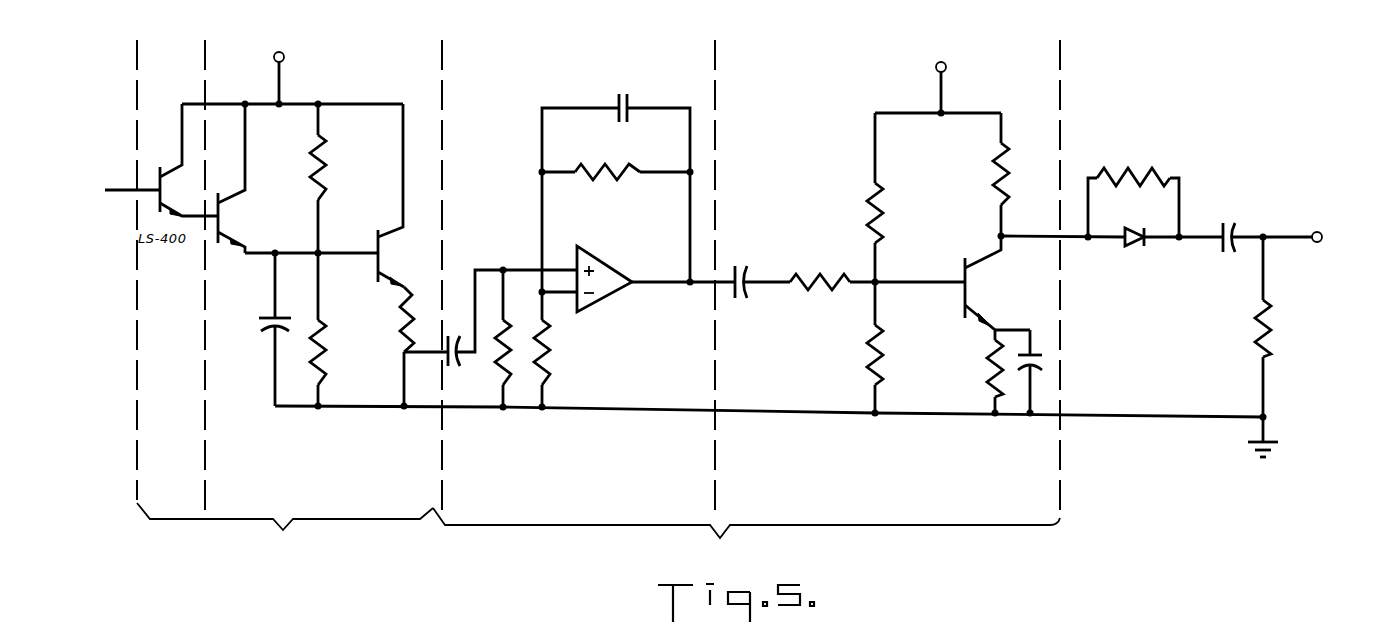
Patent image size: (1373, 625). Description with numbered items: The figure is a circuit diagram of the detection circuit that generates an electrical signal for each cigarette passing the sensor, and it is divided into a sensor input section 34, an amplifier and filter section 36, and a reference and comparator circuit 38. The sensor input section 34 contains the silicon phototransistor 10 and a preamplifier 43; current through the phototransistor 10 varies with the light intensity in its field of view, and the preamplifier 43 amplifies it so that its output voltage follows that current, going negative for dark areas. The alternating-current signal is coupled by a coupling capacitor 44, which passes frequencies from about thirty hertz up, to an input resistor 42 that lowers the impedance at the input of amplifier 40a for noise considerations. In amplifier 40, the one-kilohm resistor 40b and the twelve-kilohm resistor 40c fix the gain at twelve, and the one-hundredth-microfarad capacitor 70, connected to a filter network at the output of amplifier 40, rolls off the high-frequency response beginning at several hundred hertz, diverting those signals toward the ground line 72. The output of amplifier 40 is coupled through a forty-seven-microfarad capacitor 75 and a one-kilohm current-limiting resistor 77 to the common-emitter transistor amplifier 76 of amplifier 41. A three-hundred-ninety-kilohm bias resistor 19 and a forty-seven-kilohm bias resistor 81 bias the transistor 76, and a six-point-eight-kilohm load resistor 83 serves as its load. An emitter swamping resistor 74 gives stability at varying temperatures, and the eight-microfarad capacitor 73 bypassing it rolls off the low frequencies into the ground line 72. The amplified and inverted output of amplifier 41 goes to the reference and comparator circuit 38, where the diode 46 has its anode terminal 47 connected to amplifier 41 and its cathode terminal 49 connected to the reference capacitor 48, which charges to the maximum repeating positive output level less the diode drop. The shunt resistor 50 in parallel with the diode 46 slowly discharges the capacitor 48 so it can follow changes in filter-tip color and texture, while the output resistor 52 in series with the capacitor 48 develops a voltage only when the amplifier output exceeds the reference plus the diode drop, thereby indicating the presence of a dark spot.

The silicon phototransistor 10 is at (164, 160).
The 390K resistor 19 is at (886, 183).
The sensor input section 34 is at (280, 504).
The amplifier and filter section 36 is at (746, 538).
The reference and comparator circuit 38 is at (1185, 339).
The amplifier 40 is at (589, 292).
The amplifier 40a is at (606, 268).
The 1K resistor 40b is at (548, 383).
The 12K resistor 40c is at (612, 179).
The amplifier 41 is at (891, 283).
The input resistor 42 is at (496, 408).
The preamplifier 43 is at (322, 494).
The coupling capacitor 44 is at (512, 323).
The diode 46 is at (1136, 230).
The anode terminal 47 is at (1104, 246).
The reference capacitor 48 is at (1223, 255).
The junction 49 is at (1166, 248).
The shunt resistor 50 is at (1123, 186).
The output resistor 52 is at (1285, 313).
The capacitor 70 is at (640, 98).
The ground level line 72 is at (1268, 395).
The filter capacitor 73 is at (1037, 371).
The emitter swamping resistor 74 is at (982, 381).
The coupling capacitor 75 is at (745, 265).
The transistor amplifier 76 is at (957, 266).
The current limiting resistor 77 is at (810, 270).
The resistor 81 is at (862, 367).
The transistor amplifier load resistor 83 is at (996, 179).